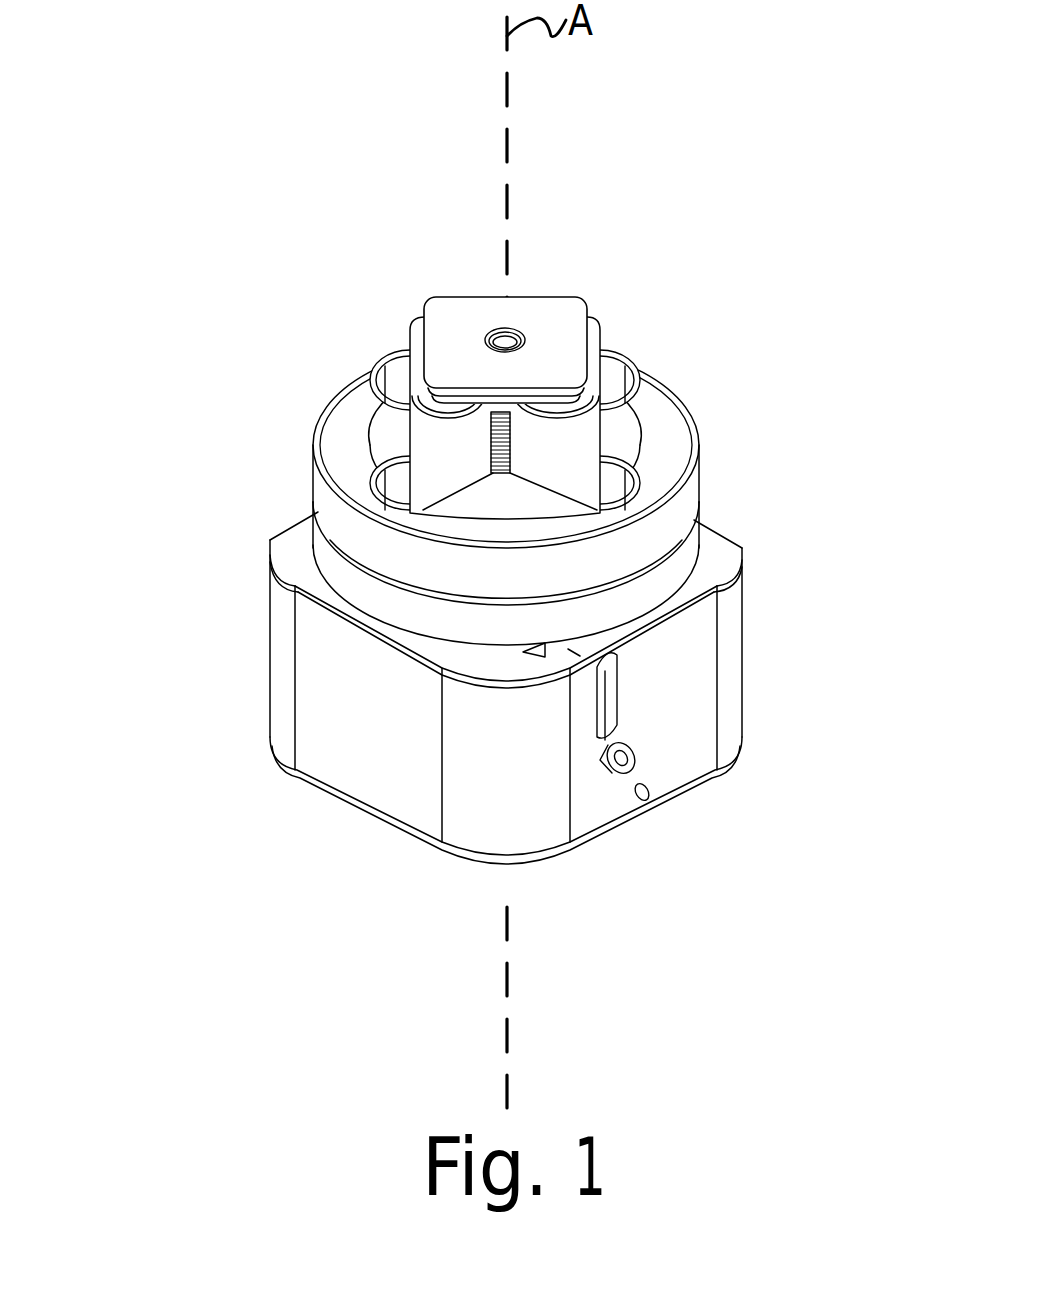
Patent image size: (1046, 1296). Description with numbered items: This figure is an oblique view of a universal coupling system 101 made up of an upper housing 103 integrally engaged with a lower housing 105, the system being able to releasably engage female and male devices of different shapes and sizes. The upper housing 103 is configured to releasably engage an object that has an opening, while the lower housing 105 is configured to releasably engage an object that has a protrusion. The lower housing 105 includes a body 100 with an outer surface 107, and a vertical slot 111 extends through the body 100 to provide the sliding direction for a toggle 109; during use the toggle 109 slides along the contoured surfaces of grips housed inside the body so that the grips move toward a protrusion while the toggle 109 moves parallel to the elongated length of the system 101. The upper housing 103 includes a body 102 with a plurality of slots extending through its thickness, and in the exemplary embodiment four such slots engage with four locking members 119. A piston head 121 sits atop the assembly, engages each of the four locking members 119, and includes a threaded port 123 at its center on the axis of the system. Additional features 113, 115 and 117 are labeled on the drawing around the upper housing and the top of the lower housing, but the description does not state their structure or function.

The body 100 is at (283, 690).
The universal coupling system 101 is at (197, 447).
The body 102 is at (333, 428).
The upper housing 103 is at (768, 428).
The lower housing 105 is at (257, 782).
The outer surface 107 is at (743, 670).
The toggle 109 is at (625, 762).
The vertical slot 111 is at (622, 690).
The mounting plate 113 is at (722, 543).
The ring 115 is at (670, 417).
The first jaw 117 is at (367, 490).
The locking members 119 is at (423, 440).
The piston head 121 is at (565, 300).
The threaded port 123 is at (508, 332).